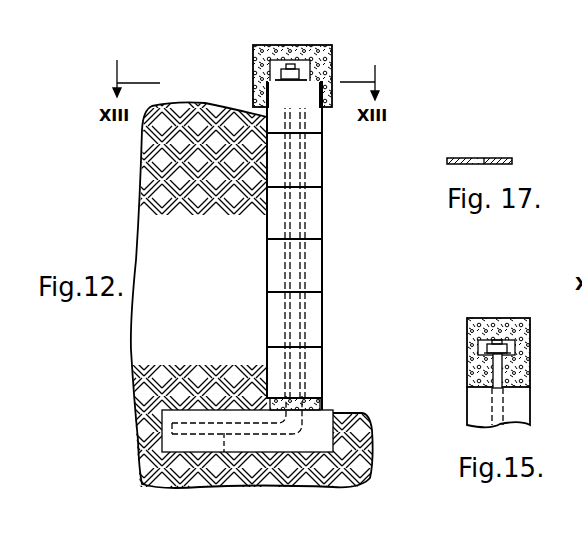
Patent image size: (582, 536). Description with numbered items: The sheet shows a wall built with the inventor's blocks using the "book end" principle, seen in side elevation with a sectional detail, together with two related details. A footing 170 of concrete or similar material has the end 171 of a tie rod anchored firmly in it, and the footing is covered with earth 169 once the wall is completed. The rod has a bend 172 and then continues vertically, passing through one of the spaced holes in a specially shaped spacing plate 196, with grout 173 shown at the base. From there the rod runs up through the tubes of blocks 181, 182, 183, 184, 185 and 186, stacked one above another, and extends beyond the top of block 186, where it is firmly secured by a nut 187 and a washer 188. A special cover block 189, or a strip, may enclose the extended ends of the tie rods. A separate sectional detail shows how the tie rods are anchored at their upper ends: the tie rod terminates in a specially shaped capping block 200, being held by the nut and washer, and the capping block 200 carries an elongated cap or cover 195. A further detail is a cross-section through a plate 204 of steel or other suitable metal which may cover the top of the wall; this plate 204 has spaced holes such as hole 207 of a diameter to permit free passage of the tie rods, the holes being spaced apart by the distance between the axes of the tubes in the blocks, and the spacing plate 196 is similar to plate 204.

In FIG. 12, the earth 169 is at (153, 155).
In FIG. 12, the footing 170 is at (195, 443).
In FIG. 12, the end of the tie rod 171 is at (224, 452).
In FIG. 12, the bend 172 is at (295, 423).
In FIG. 12, the grout 173 is at (318, 406).
In FIG. 12, the block 181 is at (314, 369).
In FIG. 12, the block 182 is at (316, 320).
In FIG. 12, the block 183 is at (314, 271).
In FIG. 12, the block 184 is at (313, 217).
In FIG. 12, the block 185 is at (318, 172).
In FIG. 12, the block 186 is at (315, 120).
In FIG. 12, the nut 187 is at (312, 57).
In FIG. 12, the washer 188 is at (310, 80).
In FIG. 12, the cover block 189 is at (279, 63).
In FIG. 15, the elongated cap 195 is at (513, 318).
In FIG. 12, the spacing plate 196 is at (300, 408).
In FIG. 15, the capping block 200 is at (476, 368).
In FIG. 15, the plate 204 is at (519, 358).
In FIG. 17, the plate 204 is at (455, 158).
In FIG. 17, the hole 207 is at (485, 160).